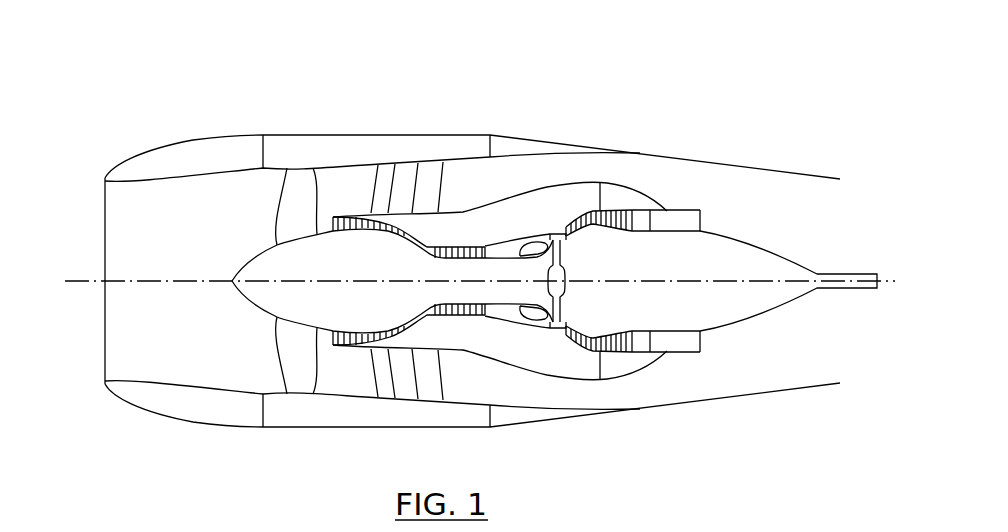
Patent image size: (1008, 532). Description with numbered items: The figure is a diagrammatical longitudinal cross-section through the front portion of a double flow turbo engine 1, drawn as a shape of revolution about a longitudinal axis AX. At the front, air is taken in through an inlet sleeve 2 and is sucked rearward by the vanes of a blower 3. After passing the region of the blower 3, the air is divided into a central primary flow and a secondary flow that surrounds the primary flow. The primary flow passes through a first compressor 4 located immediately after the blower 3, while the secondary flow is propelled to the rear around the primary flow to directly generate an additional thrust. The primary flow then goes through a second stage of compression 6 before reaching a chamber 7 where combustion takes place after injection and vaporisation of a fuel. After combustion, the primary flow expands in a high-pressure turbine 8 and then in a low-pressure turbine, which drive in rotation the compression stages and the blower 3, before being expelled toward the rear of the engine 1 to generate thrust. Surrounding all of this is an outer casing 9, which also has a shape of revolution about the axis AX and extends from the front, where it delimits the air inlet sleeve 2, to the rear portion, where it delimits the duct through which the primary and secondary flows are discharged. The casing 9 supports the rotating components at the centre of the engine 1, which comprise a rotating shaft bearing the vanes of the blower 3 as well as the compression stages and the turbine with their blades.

The double flow turbo engine 1 is at (461, 219).
The inlet sleeve 2 is at (187, 225).
The blower 3 is at (297, 354).
The first compressor 4 is at (352, 210).
The second stage of compression 6 is at (463, 235).
The chamber 7 is at (552, 222).
The high-pressure turbine 8 is at (607, 202).
The outer casing 9 is at (400, 147).
The longitudinal axis AX is at (78, 276).